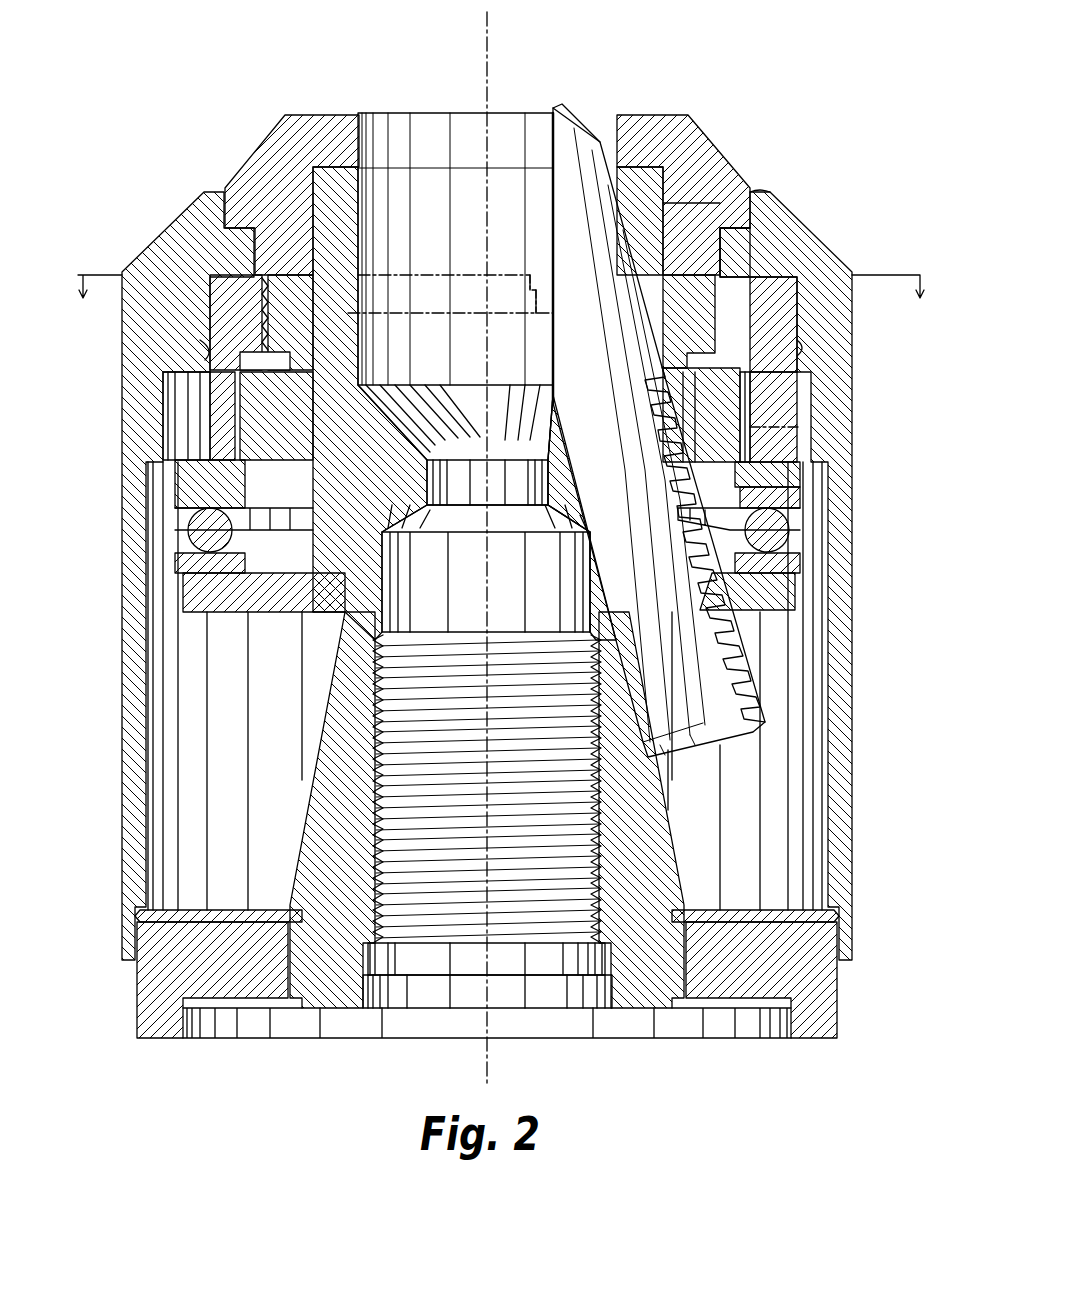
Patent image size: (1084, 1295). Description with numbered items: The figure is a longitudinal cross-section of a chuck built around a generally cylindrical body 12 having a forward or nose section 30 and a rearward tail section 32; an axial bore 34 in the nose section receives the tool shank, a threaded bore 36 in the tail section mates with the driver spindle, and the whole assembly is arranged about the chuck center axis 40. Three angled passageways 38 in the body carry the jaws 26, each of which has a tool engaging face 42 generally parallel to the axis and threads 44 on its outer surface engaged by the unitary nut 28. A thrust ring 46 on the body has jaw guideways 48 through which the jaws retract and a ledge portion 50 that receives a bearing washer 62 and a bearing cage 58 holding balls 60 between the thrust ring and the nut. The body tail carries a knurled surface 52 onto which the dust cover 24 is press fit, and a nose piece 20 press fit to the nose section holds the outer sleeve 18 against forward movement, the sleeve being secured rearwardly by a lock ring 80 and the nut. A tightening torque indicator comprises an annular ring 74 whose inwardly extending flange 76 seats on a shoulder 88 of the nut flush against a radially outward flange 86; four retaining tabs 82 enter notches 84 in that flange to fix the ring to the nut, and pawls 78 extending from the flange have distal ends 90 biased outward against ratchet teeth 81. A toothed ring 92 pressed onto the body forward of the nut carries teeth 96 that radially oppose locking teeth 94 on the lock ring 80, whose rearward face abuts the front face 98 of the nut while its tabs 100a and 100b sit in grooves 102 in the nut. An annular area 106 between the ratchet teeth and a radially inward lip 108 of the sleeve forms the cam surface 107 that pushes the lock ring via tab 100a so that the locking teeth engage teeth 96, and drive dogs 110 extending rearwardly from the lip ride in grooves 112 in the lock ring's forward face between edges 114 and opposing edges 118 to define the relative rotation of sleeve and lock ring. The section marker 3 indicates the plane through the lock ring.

The section line 3- 3 is at (501, 301).
The body 12 is at (300, 812).
The sleeve 18 is at (842, 261).
The nose piece 20 is at (712, 160).
The dust cover 24 is at (837, 996).
The jaws 26 is at (577, 127).
The nut 28 is at (813, 380).
The forward section 30 is at (667, 203).
The tail section 32 is at (670, 853).
The axial bore 34 is at (363, 200).
The threaded bore 36 is at (373, 887).
The passageways 38 is at (616, 150).
The chuck center axis 40 is at (487, 27).
The tool engaging face 42 is at (547, 142).
The threads 44 is at (733, 670).
The thrust ring 46 is at (180, 594).
The jaw guideways 48 is at (705, 628).
The ledge portion 50 is at (335, 590).
The knurled surface 52 is at (683, 943).
The bearing cage 58 is at (190, 527).
The balls 60 is at (212, 505).
The bearing washer 62 is at (193, 567).
The annular ring 74 is at (800, 530).
The flange 76 is at (230, 465).
The pawls 78 is at (200, 427).
The lock ring 80 is at (712, 310).
The ratchet teeth 81 is at (183, 403).
The retaining tabs 82 is at (760, 483).
The notches 84 is at (783, 475).
The flange 86 is at (800, 507).
The shoulder 88 is at (790, 585).
The distal ends 90 is at (800, 428).
The toothed ring 92 is at (283, 275).
The locking teeth 94 is at (225, 274).
The teeth 96 is at (745, 318).
The front face 98 is at (797, 345).
The tab 100a is at (210, 350).
The tab 100b is at (813, 395).
The grooves 102 is at (790, 443).
The annular area 106 is at (803, 257).
The cam surface 107 is at (258, 384).
The lip 108 is at (773, 277).
The drive dogs 110 is at (473, 295).
The grooves 112 is at (420, 313).
The edges 114 is at (355, 293).
The opposing edges 118 is at (530, 290).